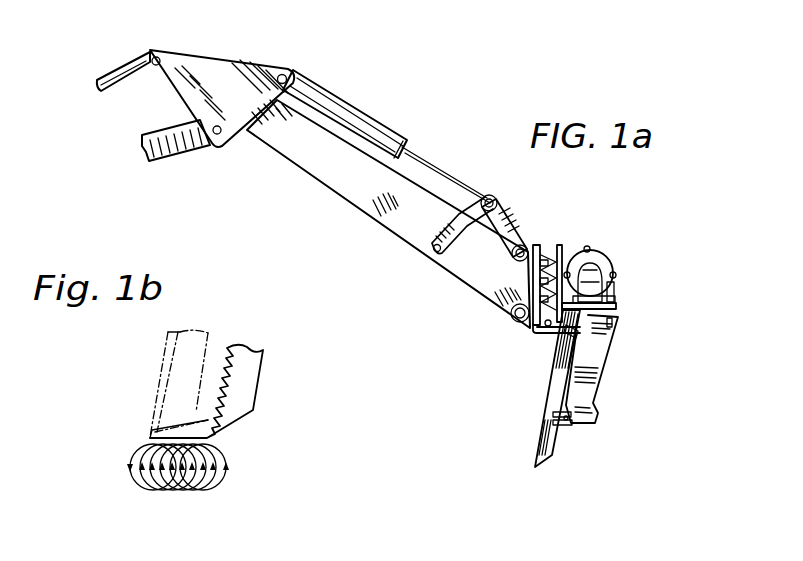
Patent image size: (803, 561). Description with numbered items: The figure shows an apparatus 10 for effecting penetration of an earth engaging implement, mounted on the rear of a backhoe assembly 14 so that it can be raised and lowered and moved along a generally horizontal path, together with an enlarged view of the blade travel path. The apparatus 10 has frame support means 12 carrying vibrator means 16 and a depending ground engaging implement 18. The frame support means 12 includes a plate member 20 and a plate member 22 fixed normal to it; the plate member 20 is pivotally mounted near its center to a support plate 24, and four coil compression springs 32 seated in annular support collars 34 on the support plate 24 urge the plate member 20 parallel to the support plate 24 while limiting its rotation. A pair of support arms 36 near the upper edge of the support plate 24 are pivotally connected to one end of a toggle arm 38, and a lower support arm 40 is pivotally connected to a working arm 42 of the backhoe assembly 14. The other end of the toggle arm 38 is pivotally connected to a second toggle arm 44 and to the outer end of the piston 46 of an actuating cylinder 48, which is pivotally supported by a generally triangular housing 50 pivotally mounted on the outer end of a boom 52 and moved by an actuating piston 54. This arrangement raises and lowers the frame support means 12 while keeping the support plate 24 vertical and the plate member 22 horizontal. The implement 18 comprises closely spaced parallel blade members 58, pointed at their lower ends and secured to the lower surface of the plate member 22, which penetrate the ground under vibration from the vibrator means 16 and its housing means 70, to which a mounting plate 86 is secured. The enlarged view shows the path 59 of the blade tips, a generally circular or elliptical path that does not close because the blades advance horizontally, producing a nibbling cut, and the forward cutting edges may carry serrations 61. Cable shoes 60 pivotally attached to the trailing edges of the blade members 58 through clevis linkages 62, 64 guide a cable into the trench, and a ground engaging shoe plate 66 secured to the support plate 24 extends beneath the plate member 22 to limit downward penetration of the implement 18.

In FIG. 1A, the apparatus 10 is at (647, 214).
In FIG. 1A, the frame support means 12 is at (523, 336).
In FIG. 1A, the backhoe assembly 14 is at (308, 202).
In FIG. 1A, the vibrator means 16 is at (630, 261).
In FIG. 1A, the ground engaging implement 18 is at (527, 427).
In FIG. 1A, the plate member 20 is at (585, 250).
In FIG. 1A, the plate member 22 is at (616, 308).
In FIG. 1A, the support plate 24 is at (544, 252).
In FIG. 1A, the coil compression springs 32 is at (558, 248).
In FIG. 1A, the annular support collars 34 is at (428, 560).
In FIG. 1A, the support arms 36 is at (533, 245).
In FIG. 1A, the toggle arm 38 is at (512, 223).
In FIG. 1A, the support arm 40 is at (518, 322).
In FIG. 1A, the working arm 42 is at (463, 272).
In FIG. 1A, the second toggle arm 44 is at (460, 207).
In FIG. 1A, the piston 46 is at (432, 167).
In FIG. 1A, the actuating cylinder 48 is at (367, 113).
In FIG. 1A, the housing 50 is at (217, 63).
In FIG. 1A, the boom 52 is at (163, 152).
In FIG. 1A, the actuating piston 54 is at (115, 95).
In FIG. 1A, the blade members 58 is at (540, 445).
In FIG. 1B, the blade members 58 is at (208, 333).
In FIG. 1B, the path 59 is at (190, 490).
In FIG. 1A, the cable shoes 60 is at (590, 365).
In FIG. 1B, the serrations 61 is at (190, 418).
In FIG. 1A, the clevis linkage 62 is at (565, 420).
In FIG. 1A, the clevis linkage 64 is at (575, 333).
In FIG. 1A, the ground engaging shoe plate 66 is at (548, 323).
In FIG. 1A, the housing means 70 is at (610, 250).
In FIG. 1A, the mounting plate 86 is at (612, 293).